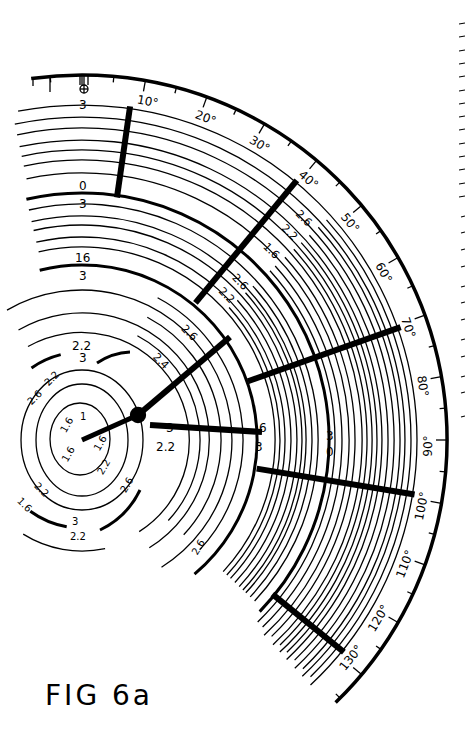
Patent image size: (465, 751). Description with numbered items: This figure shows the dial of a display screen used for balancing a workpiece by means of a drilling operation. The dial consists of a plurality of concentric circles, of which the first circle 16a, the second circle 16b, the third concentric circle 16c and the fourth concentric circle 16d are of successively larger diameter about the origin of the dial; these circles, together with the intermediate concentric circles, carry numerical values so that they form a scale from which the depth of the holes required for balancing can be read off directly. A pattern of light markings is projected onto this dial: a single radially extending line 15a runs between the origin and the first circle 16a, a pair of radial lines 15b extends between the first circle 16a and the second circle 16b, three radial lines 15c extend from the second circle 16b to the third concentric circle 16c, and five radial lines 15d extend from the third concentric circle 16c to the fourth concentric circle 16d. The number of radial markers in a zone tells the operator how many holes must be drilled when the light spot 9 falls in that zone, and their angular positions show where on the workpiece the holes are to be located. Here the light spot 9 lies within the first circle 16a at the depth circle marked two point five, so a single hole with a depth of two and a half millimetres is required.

The light spot 9 is at (147, 432).
The radially extending line 15a is at (112, 440).
The pair of radial lines 15b is at (231, 450).
The three radial lines 15c is at (226, 389).
The five radial lines 15d is at (275, 353).
The first circle 16a is at (60, 527).
The second circle 16b is at (101, 267).
The third concentric circle 16c is at (50, 195).
The fourth concentric circle 16d is at (113, 105).